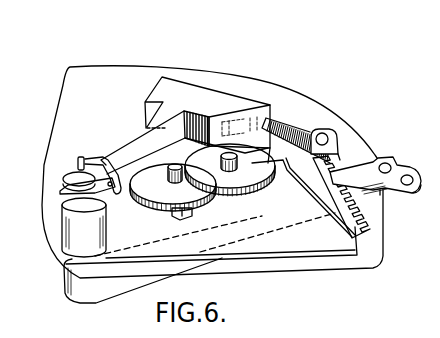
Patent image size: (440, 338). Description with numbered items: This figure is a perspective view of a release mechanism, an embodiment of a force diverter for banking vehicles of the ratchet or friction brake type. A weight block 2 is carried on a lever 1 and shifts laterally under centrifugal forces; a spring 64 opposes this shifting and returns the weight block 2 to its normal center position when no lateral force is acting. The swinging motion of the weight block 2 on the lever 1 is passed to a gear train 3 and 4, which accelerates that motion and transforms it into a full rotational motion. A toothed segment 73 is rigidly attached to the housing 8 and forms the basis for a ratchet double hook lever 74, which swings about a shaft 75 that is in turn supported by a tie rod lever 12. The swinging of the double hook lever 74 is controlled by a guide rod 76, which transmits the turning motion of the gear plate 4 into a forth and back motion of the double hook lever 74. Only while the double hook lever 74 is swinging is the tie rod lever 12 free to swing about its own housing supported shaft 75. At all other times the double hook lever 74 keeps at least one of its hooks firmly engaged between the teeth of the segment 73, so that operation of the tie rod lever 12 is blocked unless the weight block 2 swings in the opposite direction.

The lever 1 is at (138, 132).
The weight block 2 is at (215, 87).
The gear train 3 is at (262, 192).
The gear plate 4 is at (148, 192).
The housing 8 is at (383, 258).
The tie rod lever 12 is at (374, 196).
The spring 64 is at (60, 178).
The toothed segment 73 is at (279, 140).
The ratchet double hook lever 74 is at (340, 154).
The shaft 75 is at (324, 128).
The guide rod 76 is at (290, 174).